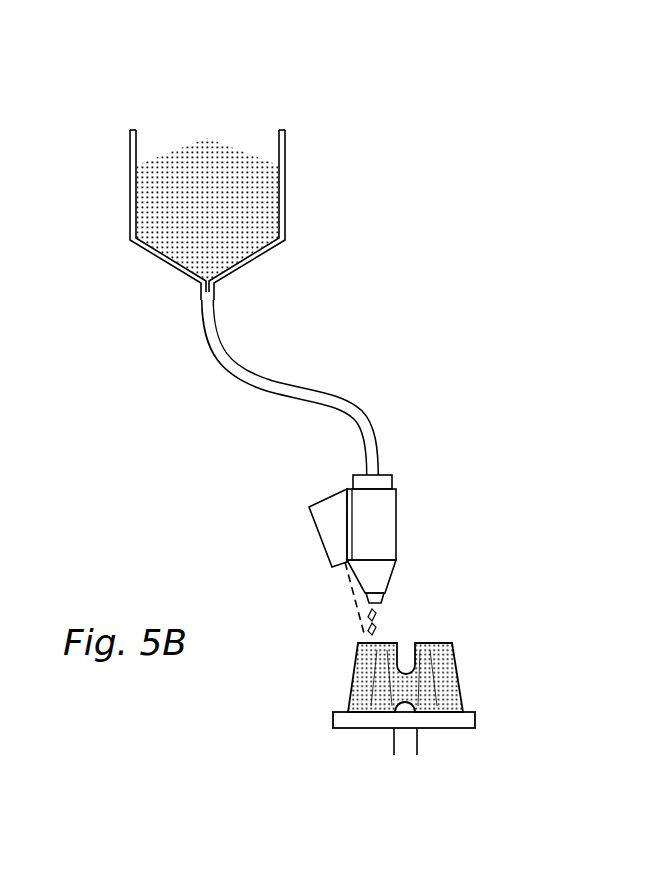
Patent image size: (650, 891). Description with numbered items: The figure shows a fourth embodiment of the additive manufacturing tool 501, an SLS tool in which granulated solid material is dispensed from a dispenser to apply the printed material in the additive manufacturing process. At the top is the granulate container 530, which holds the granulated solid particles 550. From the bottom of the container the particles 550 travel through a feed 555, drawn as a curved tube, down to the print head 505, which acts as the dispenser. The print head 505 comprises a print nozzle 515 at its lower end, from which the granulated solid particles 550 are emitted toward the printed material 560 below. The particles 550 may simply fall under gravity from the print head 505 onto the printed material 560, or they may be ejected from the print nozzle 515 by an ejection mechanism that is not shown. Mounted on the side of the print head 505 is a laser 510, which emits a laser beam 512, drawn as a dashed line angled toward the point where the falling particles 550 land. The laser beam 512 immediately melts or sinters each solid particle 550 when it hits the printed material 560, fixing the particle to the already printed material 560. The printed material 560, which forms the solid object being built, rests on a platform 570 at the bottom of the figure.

The additive manufacturing tool 501 is at (480, 244).
The print head 505 is at (390, 515).
The laser 510 is at (323, 527).
The laser beam 512 is at (353, 600).
The print nozzle 515 is at (381, 598).
The granulate container 530 is at (285, 192).
The granulated solid particles 550 is at (210, 160).
The feed 555 is at (348, 403).
The printed material 560 is at (453, 662).
The platform 570 is at (468, 722).